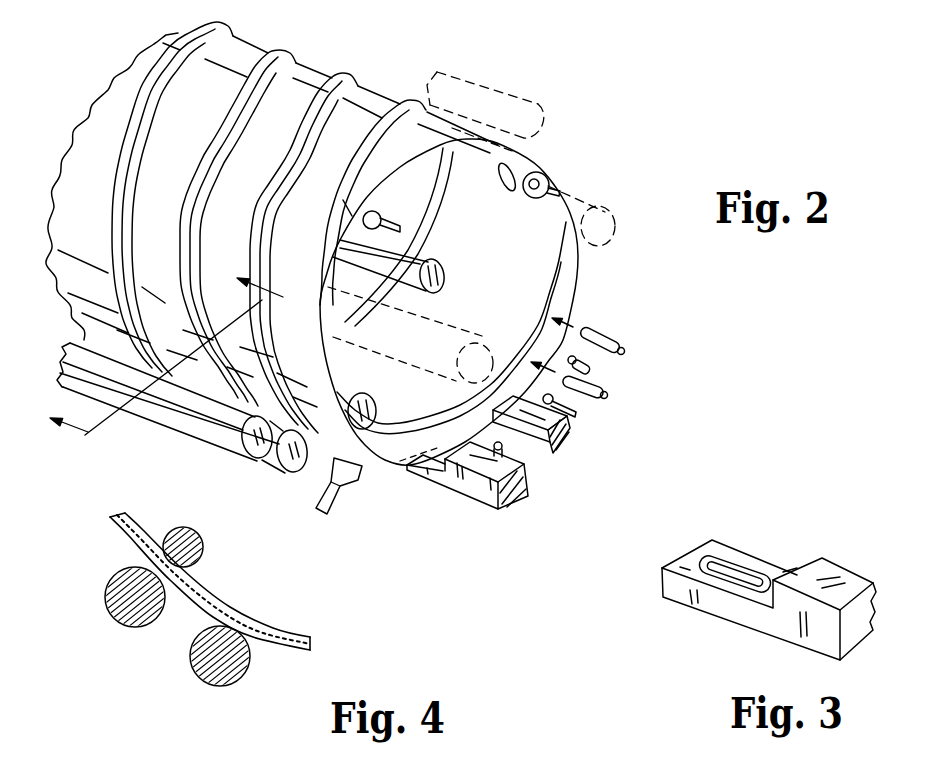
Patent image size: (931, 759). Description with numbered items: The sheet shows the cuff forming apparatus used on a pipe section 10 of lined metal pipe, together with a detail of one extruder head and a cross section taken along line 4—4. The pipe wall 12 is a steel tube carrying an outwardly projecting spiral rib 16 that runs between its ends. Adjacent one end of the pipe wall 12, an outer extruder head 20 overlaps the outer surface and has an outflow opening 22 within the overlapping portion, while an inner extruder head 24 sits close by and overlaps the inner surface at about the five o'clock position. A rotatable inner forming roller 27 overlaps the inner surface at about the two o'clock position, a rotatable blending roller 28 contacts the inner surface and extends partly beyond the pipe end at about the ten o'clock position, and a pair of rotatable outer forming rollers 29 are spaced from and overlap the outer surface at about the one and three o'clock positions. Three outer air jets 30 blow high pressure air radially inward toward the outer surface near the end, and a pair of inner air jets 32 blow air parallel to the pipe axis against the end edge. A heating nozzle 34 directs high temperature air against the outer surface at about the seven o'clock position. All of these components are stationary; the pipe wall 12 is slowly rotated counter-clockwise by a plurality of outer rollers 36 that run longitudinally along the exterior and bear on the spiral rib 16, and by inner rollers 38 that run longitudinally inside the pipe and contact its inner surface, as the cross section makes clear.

In FIG. 2, the pipe section 10 is at (622, 185).
In FIG. 4, the pipe section 10 is at (115, 641).
In FIG. 2, the pipe wall 12 is at (376, 105).
In FIG. 4, the pipe wall 12 is at (248, 617).
In FIG. 2, the spiral rib 16 is at (277, 56).
In FIG. 4, the spiral rib 16 is at (124, 529).
In FIG. 2, the outer extruder head 20 is at (470, 497).
In FIG. 3, the outer extruder head 20 is at (830, 575).
In FIG. 3, the outflow opening 22 is at (747, 553).
In FIG. 2, the inner extruder head 24 is at (565, 450).
In FIG. 2, the inner forming roller 27 is at (543, 165).
In FIG. 2, the blending roller 28 is at (378, 211).
In FIG. 2, the outer forming rollers 29 is at (500, 100).
In FIG. 2, the outer air jets 30 is at (598, 370).
In FIG. 2, the inner air jets 32 is at (610, 332).
In FIG. 2, the heating nozzle 34 is at (347, 484).
In FIG. 2, the outer rollers 36 is at (283, 475).
In FIG. 4, the outer rollers 36 is at (196, 662).
In FIG. 2, the inner rollers 38 is at (436, 262).
In FIG. 4, the inner rollers 38 is at (204, 550).
In FIG. 2, the section line 4— 4 is at (178, 367).